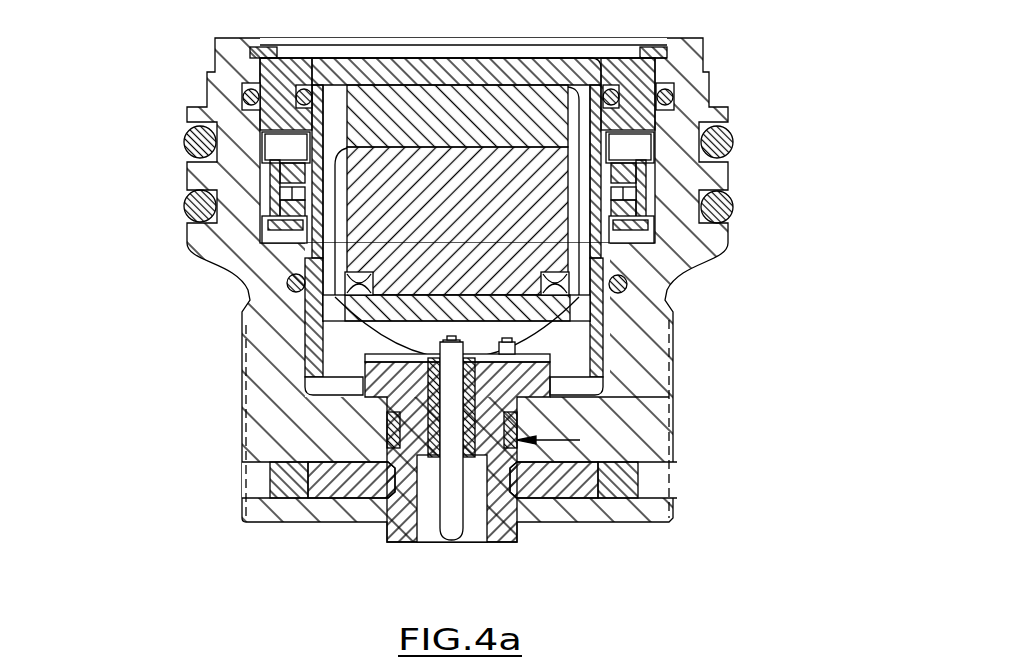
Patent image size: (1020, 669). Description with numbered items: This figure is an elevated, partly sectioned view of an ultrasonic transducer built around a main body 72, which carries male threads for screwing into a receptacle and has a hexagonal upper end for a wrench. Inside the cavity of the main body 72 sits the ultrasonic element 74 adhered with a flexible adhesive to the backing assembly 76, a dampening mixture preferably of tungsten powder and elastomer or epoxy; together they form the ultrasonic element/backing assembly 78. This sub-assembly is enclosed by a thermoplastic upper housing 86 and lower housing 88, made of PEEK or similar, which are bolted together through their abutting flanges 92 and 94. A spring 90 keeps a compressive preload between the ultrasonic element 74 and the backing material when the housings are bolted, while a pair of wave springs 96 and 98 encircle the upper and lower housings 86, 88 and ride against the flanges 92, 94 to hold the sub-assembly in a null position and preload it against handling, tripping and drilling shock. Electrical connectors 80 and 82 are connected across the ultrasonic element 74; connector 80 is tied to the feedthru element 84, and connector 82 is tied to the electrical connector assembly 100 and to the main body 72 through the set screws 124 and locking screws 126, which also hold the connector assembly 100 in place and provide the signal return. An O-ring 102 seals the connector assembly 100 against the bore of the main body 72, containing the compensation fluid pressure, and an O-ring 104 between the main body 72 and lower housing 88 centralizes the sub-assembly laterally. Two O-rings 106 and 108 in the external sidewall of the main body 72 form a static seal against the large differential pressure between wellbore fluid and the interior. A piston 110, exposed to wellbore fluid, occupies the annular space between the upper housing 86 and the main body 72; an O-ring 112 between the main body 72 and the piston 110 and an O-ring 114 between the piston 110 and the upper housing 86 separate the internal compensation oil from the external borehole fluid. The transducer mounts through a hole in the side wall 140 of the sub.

The main body 72 is at (737, 228).
The ultrasonic element 74 is at (428, 72).
The backing assembly 76 is at (472, 162).
The ultrasonic element/backing assembly 78 is at (375, 44).
The electrical connector 80 is at (305, 388).
The electrical connector 82 is at (593, 357).
The feedthru element 84 is at (440, 527).
The upper housing 86 is at (657, 88).
The lower housing 88 is at (655, 248).
The spring 90 is at (333, 298).
The flange 92 is at (273, 180).
The flange 94 is at (273, 220).
The wave spring 96 is at (666, 131).
The wave spring 98 is at (722, 147).
The electrical connector assembly 100 is at (370, 545).
The O-ring 102 is at (370, 422).
The O-ring 104 is at (647, 293).
The O-ring 106 is at (178, 142).
The O-ring 108 is at (178, 208).
The piston 110 is at (616, 55).
The O-ring 112 is at (228, 88).
The O-ring 114 is at (280, 86).
The set screws 124 is at (553, 494).
The locking screws 126 is at (646, 484).
The side wall 140 is at (672, 413).